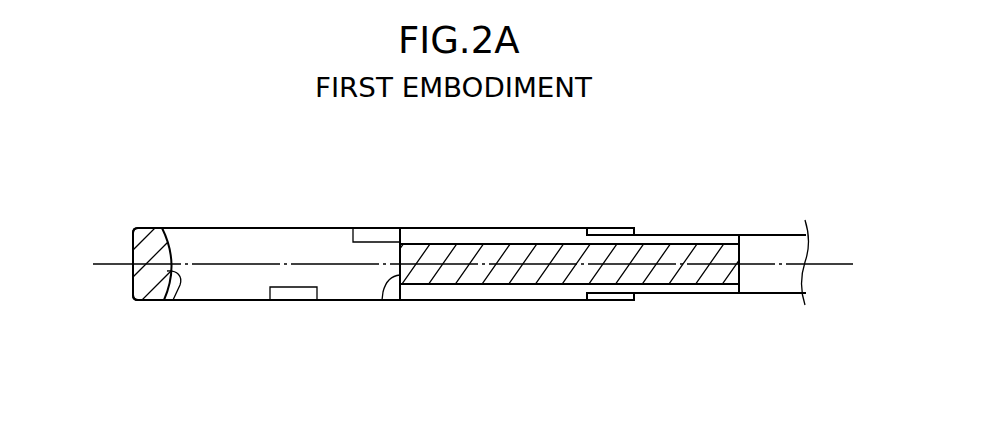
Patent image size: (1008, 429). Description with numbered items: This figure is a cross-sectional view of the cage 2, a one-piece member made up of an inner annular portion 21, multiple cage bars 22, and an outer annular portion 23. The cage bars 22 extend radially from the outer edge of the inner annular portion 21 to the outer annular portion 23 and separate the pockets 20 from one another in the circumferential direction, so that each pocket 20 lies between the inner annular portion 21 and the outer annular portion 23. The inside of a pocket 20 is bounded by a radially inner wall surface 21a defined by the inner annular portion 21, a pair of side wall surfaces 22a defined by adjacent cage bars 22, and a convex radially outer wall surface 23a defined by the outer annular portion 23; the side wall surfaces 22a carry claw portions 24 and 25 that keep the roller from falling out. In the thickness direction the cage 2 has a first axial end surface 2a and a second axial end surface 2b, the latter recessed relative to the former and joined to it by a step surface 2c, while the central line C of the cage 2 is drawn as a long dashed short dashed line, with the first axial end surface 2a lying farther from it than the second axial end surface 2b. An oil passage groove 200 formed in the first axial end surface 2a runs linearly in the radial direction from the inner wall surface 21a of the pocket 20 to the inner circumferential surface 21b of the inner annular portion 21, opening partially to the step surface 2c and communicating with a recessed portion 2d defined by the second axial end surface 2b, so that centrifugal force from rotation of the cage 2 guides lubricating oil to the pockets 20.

The cage 2 is at (112, 207).
The pocket 20 is at (194, 234).
The cage bar 22 is at (268, 228).
The side wall surface 22a is at (228, 287).
The outer annular portion 23 is at (148, 248).
The radially outer wall surface 23a is at (172, 300).
The claw portion 24 is at (293, 293).
The claw portion 25 is at (370, 235).
The inner annular portion 21 is at (435, 253).
The radially inner wall surface 21a is at (382, 300).
The inner circumferential surface 21b is at (743, 270).
The first axial end surface 2a is at (463, 228).
The oil passage groove 200 is at (544, 228).
The step surface 2c is at (608, 232).
The second axial end surface 2b is at (687, 233).
The recessed portion 2d is at (742, 218).
The central line C is at (840, 260).